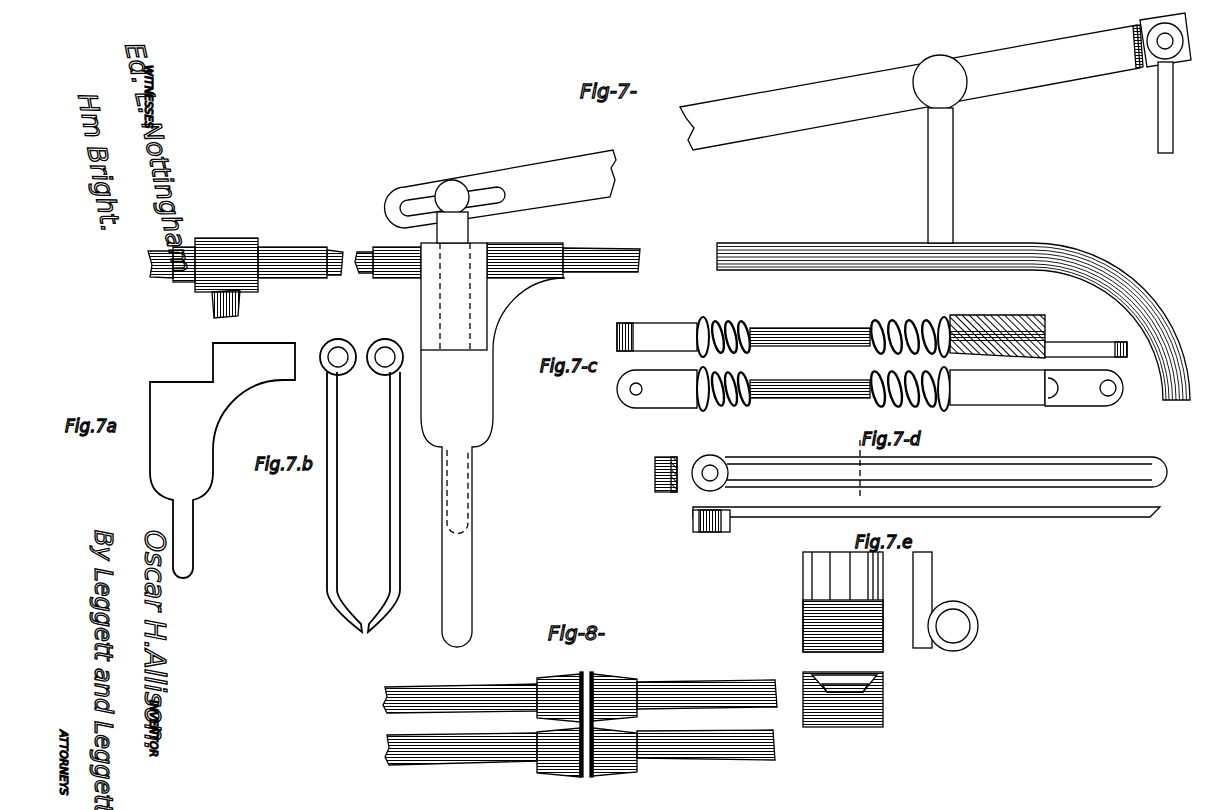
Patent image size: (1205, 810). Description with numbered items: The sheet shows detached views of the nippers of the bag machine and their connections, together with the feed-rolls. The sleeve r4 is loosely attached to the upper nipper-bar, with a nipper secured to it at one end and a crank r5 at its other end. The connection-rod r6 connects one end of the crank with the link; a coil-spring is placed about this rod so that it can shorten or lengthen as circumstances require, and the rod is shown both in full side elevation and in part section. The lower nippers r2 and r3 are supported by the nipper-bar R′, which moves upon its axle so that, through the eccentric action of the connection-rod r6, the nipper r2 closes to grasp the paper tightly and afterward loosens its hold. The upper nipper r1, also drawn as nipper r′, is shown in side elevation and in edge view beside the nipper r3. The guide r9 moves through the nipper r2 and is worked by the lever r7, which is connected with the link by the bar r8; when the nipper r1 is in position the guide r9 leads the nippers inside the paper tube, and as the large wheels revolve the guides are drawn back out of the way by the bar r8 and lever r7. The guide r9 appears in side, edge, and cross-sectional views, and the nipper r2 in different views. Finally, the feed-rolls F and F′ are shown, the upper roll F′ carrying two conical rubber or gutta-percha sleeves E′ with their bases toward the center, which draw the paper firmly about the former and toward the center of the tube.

In FIG. 7, the crank r5 is at (203, 257).
In FIG. 7, the sleeve r4 is at (329, 252).
In FIG. 7, the connection-rod r6 is at (226, 304).
In FIG. 7C, the connection-rod r6 is at (872, 363).
In FIG. 7, the nipper-bar R′ is at (771, 310).
In FIG. 7, the nipper r3 is at (454, 296).
In FIG. 7B, the nipper r3 is at (341, 485).
In FIG. 7, the guide r9 is at (493, 462).
In FIG. 7D, the guide r9 is at (911, 488).
In FIG. 7, the lever r7 is at (787, 128).
In FIG. 7, the bar r8 is at (1151, 107).
In FIG. 7A, the nipper r′ is at (222, 460).
In FIG. 7B, the nipper r′ is at (389, 485).
In FIG. 7E, the nipper r1 is at (833, 639).
In FIG. 7E, the nipper r2 is at (945, 601).
In FIG. 8, the feed-roll F′ is at (568, 696).
In FIG. 8, the feed-roll F is at (570, 747).
In FIG. 8, the rubber or gutta-percha sleeve E′ is at (587, 726).